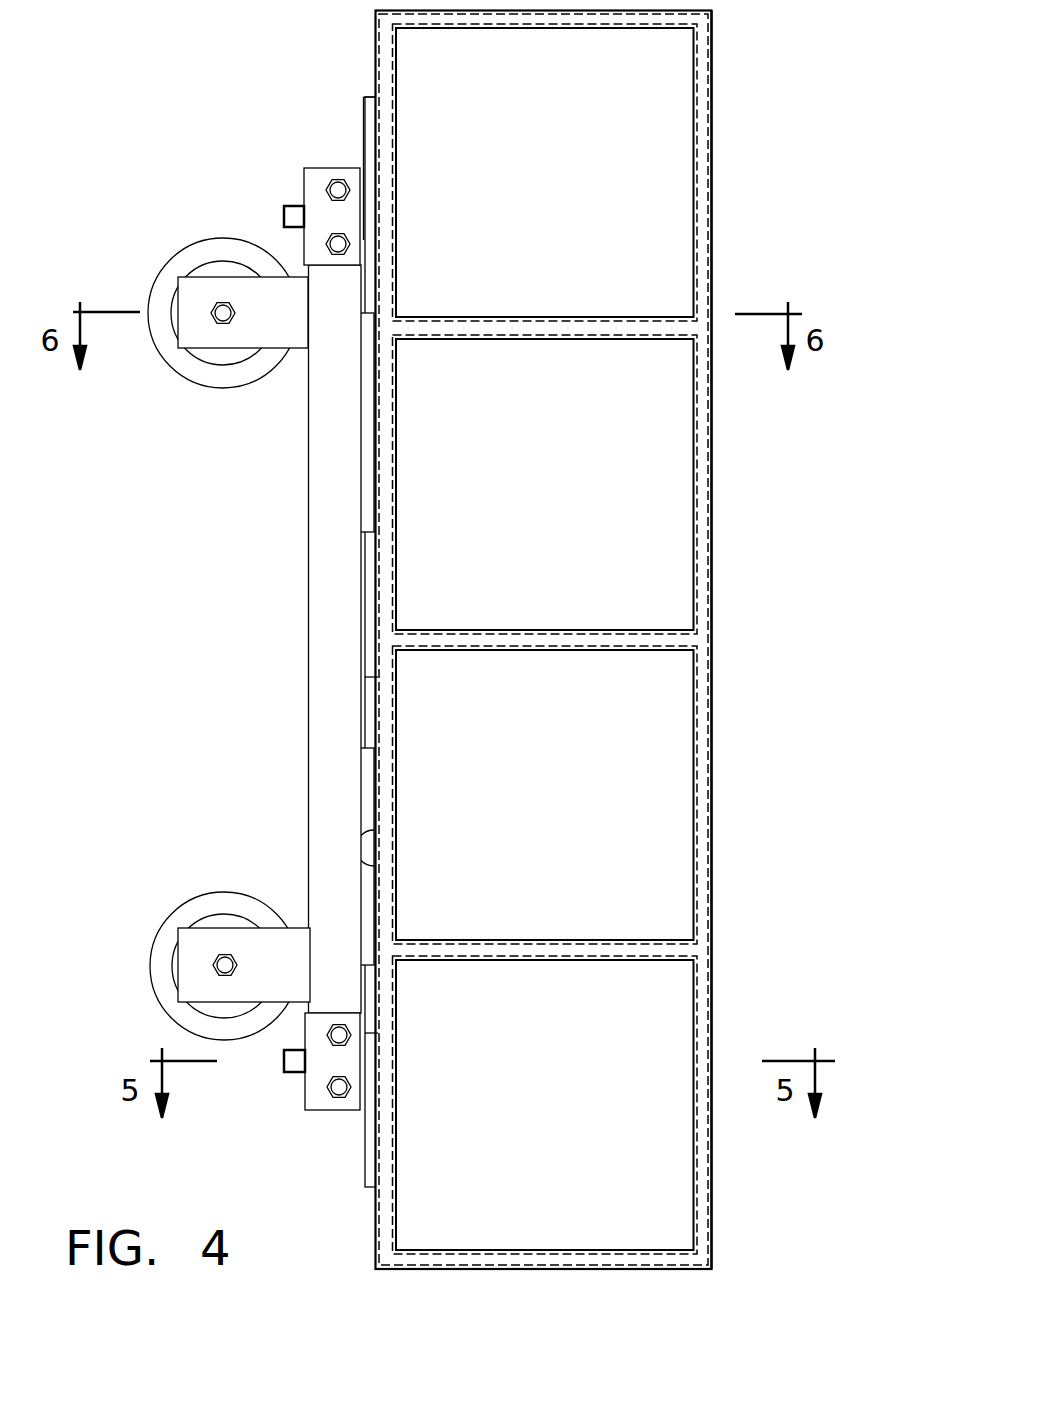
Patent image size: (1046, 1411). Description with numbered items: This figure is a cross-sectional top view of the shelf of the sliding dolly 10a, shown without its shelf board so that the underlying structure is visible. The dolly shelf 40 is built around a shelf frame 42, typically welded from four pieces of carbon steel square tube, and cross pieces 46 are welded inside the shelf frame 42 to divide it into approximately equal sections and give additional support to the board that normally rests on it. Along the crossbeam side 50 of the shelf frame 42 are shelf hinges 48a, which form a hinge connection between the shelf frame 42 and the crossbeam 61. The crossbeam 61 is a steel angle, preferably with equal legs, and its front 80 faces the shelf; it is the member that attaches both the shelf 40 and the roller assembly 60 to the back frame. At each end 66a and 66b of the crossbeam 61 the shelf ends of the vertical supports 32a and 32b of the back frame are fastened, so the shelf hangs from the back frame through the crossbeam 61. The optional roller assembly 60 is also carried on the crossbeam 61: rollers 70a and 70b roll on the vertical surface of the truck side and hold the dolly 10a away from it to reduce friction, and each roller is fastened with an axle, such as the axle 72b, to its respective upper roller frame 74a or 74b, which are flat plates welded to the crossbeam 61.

The sliding dolly 10a is at (650, 640).
The dolly shelf 40 is at (597, 640).
The shelf frame 42 is at (713, 452).
The cross pieces 46 is at (500, 652).
The shelf hinges 48a is at (364, 131).
The crossbeam side 50 is at (371, 842).
The roller assembly 60 is at (182, 629).
The crossbeam 61 is at (308, 677).
The end of crossbeam 66a is at (333, 168).
The end of crossbeam 66b is at (333, 1111).
The vertical support 32a is at (291, 207).
The vertical support 32b is at (283, 1063).
The roller 70a is at (153, 288).
The roller 70b is at (153, 940).
The axle 72b is at (220, 302).
The upper roller frame 74a is at (297, 273).
The upper roller frame 74b is at (298, 927).
The front of crossbeam 80 is at (356, 411).